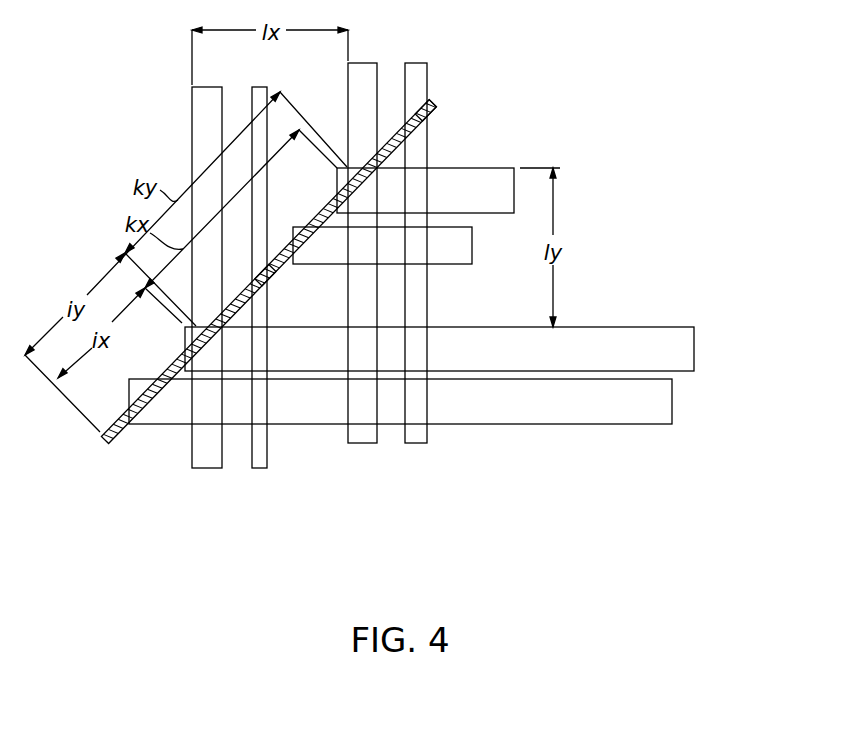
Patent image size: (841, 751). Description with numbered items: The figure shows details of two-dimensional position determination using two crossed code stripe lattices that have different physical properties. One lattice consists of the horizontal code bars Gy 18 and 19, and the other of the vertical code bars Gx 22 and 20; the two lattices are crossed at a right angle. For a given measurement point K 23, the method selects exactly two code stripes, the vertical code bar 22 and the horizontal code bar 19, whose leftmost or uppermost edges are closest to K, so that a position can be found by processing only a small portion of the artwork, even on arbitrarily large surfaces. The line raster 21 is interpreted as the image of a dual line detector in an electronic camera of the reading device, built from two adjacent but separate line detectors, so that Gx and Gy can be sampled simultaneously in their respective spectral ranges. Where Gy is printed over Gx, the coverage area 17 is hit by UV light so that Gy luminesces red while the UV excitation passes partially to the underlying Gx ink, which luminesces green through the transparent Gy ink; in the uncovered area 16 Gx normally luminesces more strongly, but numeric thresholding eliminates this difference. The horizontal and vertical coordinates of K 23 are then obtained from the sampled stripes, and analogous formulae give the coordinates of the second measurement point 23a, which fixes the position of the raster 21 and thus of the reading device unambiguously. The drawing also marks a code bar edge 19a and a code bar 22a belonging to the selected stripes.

The uncovered area of Gx 16 is at (427, 138).
The coverage area 17 is at (493, 167).
The code bars Gy 18 is at (458, 191).
The code bars Gy 19 is at (444, 352).
The upper electrode of pair 19 19a is at (441, 326).
The code bars Gx 20 is at (413, 286).
The line raster 21 is at (268, 272).
The code bars Gx 22 is at (196, 308).
The left electrode of pair 22 22a is at (192, 108).
The measurement point K 23 is at (104, 444).
The second measurement point 23a is at (435, 100).